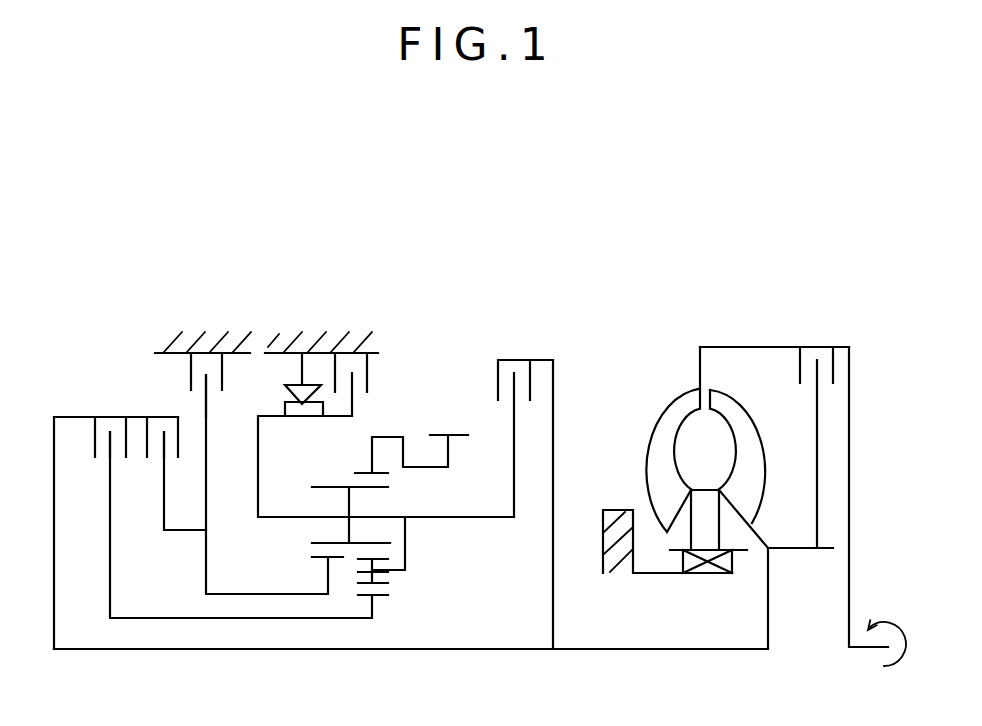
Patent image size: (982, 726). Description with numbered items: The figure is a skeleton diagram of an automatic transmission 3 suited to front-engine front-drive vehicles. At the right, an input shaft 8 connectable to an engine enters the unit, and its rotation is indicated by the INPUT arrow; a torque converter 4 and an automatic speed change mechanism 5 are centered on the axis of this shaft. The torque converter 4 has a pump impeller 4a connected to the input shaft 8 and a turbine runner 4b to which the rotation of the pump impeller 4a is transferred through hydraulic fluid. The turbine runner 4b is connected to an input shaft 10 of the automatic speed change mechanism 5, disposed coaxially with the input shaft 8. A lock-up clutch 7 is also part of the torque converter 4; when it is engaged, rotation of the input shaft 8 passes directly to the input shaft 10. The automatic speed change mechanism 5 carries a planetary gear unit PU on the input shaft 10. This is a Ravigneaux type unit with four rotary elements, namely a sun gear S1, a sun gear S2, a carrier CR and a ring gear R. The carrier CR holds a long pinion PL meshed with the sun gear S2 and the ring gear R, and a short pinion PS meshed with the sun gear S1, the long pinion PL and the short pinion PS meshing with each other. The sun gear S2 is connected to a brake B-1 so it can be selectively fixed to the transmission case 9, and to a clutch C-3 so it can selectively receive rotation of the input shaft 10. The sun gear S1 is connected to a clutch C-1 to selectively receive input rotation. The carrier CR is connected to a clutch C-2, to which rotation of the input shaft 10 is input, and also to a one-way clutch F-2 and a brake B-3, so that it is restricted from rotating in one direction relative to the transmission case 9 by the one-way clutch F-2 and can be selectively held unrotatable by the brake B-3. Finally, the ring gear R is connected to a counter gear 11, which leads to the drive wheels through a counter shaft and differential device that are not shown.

The automatic transmission 3 is at (415, 240).
The automatic speed change mechanism 5 is at (493, 310).
The transmission case 9 is at (158, 340).
The torque converter 4 is at (662, 380).
The pump impeller 4a is at (650, 456).
The turbine runner 4b is at (762, 442).
The lock-up clutch 7 is at (820, 345).
The input shaft 8 is at (850, 497).
The input shaft 10 is at (620, 652).
The counter gear 11 is at (457, 440).
The clutch C-1 is at (82, 423).
The clutch C-2 is at (525, 424).
The clutch C-3 is at (152, 423).
The brake B-1 is at (203, 361).
The brake B-3 is at (355, 361).
The one-way clutch F-2 is at (321, 361).
The planetary gear unit PU is at (393, 410).
The long pinion PL is at (316, 487).
The ring gear R is at (368, 472).
The sun gear S2 is at (312, 557).
The short pinion PS is at (388, 578).
The sun gear S1 is at (380, 597).
The carrier CR is at (425, 531).
The input INPUT is at (856, 649).